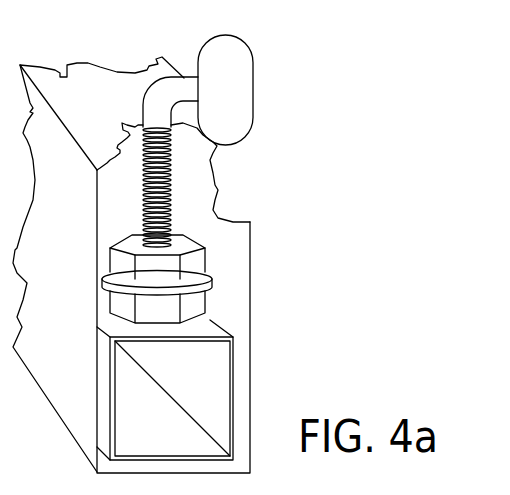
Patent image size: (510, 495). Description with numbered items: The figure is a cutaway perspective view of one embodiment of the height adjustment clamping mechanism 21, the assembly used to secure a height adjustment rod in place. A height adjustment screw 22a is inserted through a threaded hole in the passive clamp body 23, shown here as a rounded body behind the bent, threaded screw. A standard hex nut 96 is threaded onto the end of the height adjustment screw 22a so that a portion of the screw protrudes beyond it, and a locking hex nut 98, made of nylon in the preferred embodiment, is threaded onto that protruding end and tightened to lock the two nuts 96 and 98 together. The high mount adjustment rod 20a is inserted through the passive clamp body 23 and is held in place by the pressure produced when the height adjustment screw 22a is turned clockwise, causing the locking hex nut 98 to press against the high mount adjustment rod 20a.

The height adjustment clamping mechanism 21 is at (226, 234).
The high mount adjustment rod 20a is at (197, 330).
The height adjustment screw 22a is at (183, 94).
The passive clamp body 23 is at (127, 83).
The standard hex nut 96 is at (192, 264).
The locking hex nut 98 is at (192, 305).